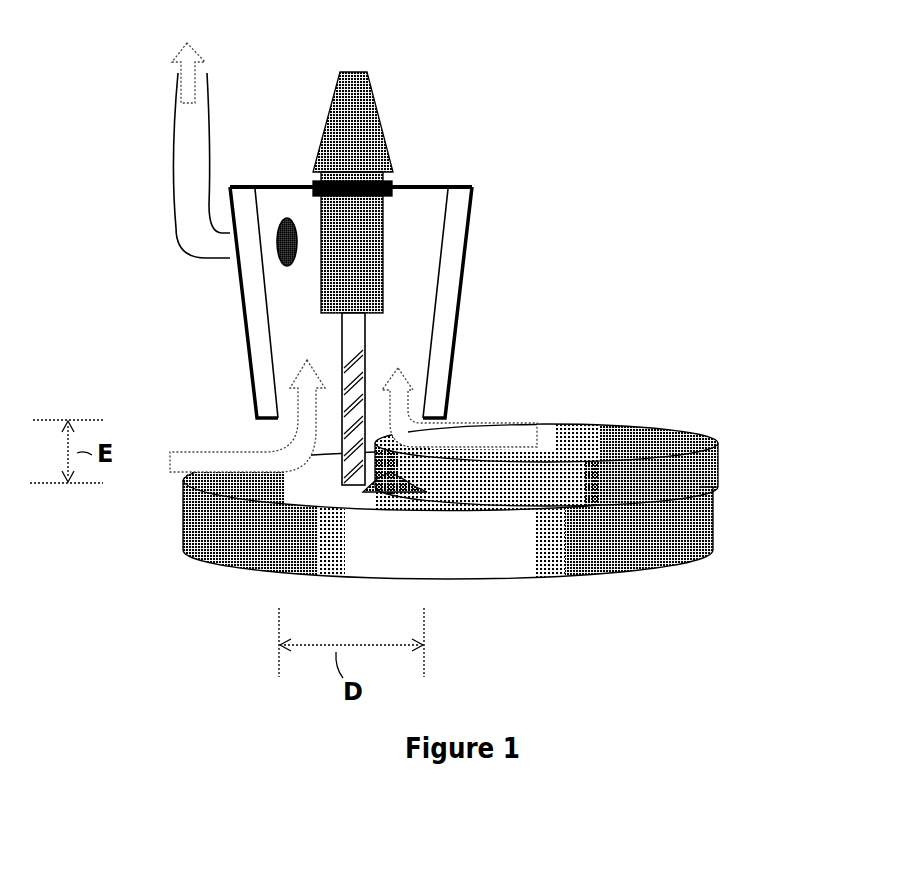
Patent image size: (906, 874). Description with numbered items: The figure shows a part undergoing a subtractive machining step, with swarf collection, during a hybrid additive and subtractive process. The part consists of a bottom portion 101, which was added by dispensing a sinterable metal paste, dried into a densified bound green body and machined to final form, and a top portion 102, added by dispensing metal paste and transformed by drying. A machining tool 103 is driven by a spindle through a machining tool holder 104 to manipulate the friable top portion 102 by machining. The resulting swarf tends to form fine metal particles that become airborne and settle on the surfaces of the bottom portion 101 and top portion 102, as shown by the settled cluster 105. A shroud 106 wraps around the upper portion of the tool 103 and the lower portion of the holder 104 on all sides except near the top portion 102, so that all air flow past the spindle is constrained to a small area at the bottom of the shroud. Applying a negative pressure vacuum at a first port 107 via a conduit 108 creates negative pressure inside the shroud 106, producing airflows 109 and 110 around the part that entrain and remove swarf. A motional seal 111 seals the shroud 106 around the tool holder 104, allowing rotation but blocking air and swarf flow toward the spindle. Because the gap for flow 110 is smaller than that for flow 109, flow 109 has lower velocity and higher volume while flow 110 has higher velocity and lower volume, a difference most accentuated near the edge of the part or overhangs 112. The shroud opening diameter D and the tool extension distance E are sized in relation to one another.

The bottom portion 101 is at (685, 557).
The top portion 102 is at (673, 430).
The machining tool 103 is at (341, 461).
The machining tool holder 104 is at (328, 120).
The settled cluster 105 is at (422, 495).
The shroud 106 is at (240, 285).
The first port 107 is at (296, 225).
The conduit 108 is at (176, 143).
The airflow 109 is at (220, 452).
The airflow 110 is at (470, 423).
The motional seal 111 is at (394, 183).
The overhangs 112 is at (718, 483).